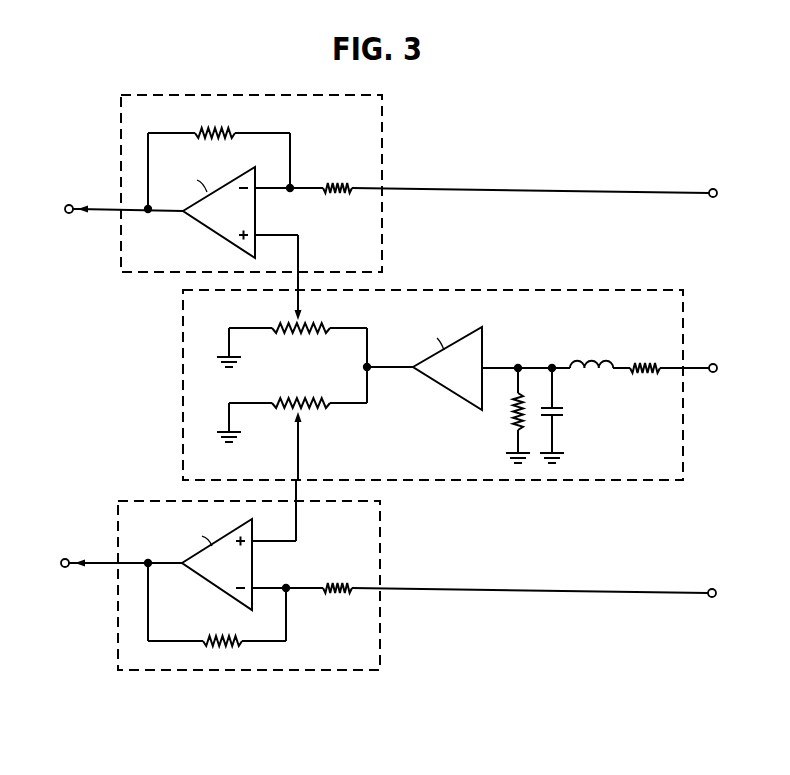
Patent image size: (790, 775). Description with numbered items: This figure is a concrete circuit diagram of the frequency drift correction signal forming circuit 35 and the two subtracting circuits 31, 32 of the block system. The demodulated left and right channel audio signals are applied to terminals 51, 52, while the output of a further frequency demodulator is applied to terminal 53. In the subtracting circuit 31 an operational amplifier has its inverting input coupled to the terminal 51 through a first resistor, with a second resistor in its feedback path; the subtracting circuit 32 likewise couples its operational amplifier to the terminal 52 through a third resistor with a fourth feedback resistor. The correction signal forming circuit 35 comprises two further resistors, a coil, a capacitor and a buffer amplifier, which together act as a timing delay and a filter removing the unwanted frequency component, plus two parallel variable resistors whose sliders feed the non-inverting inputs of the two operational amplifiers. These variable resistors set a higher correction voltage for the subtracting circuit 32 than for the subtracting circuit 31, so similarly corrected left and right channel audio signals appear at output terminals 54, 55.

The subtracting circuit 31 is at (202, 95).
The subtracting circuit 32 is at (213, 670).
The frequency drift correction signal forming circuit 35 is at (488, 290).
The terminal 51 is at (713, 189).
The terminal 52 is at (712, 589).
The terminal 53 is at (713, 364).
The output terminal 54 is at (69, 204).
The output terminal 55 is at (66, 559).